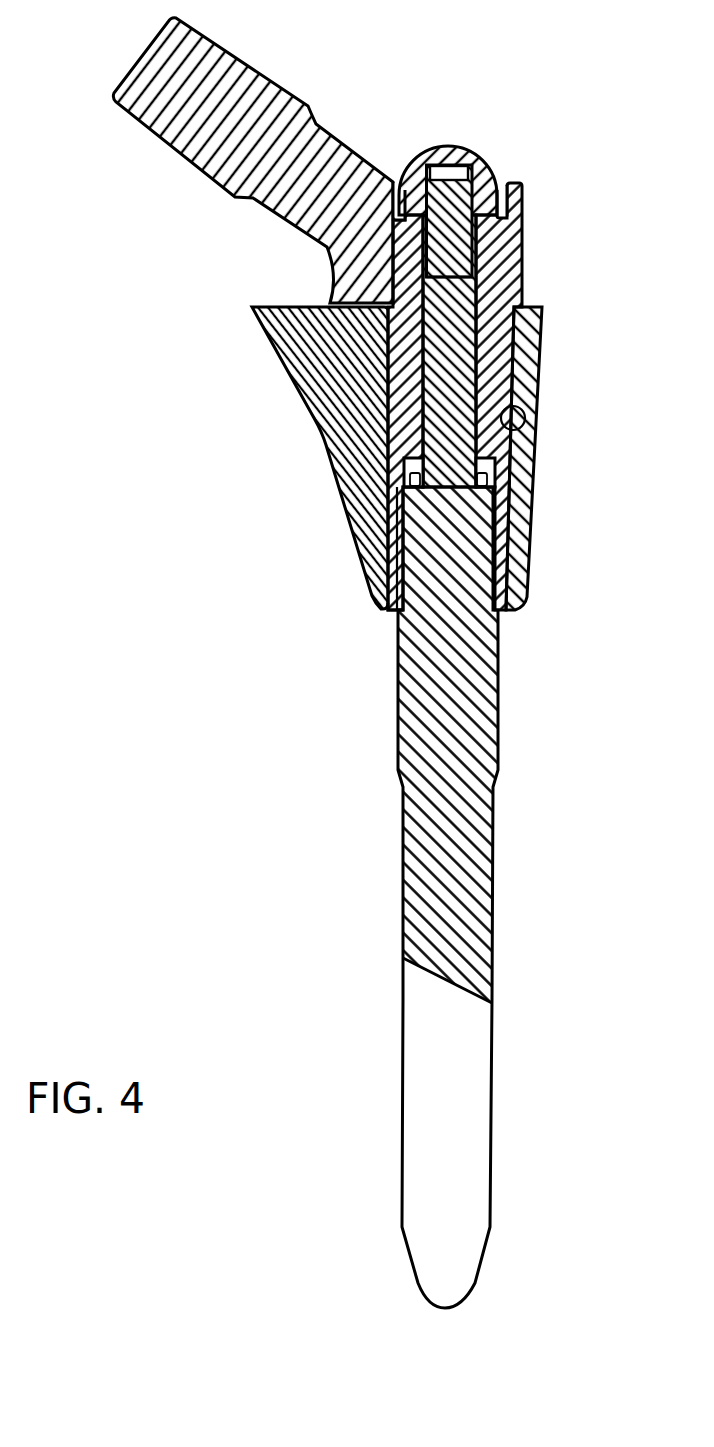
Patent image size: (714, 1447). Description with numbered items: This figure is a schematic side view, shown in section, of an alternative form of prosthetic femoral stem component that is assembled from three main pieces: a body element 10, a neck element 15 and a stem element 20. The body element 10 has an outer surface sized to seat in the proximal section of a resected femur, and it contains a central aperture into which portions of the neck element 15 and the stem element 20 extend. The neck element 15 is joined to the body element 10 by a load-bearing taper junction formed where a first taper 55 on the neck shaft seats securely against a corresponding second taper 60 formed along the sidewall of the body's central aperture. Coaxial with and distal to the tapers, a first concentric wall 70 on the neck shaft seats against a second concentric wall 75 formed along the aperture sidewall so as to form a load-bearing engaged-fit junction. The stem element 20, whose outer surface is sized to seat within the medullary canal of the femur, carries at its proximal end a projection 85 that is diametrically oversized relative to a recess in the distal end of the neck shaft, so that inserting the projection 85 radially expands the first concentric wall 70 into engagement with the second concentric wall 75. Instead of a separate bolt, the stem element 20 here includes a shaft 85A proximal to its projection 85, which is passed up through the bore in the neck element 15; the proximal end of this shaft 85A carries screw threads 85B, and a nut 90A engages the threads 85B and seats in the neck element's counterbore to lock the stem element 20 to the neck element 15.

The body element 10 is at (287, 432).
The neck element 15 is at (180, 195).
The stem element 20 is at (363, 785).
The first taper 55 is at (516, 355).
The second taper 60 is at (527, 430).
The first concentric wall 70 is at (387, 507).
The second concentric wall 75 is at (387, 553).
The projection 85 is at (457, 543).
The shaft 85A is at (447, 299).
The screw threads 85B is at (487, 262).
The nut 90A is at (480, 162).